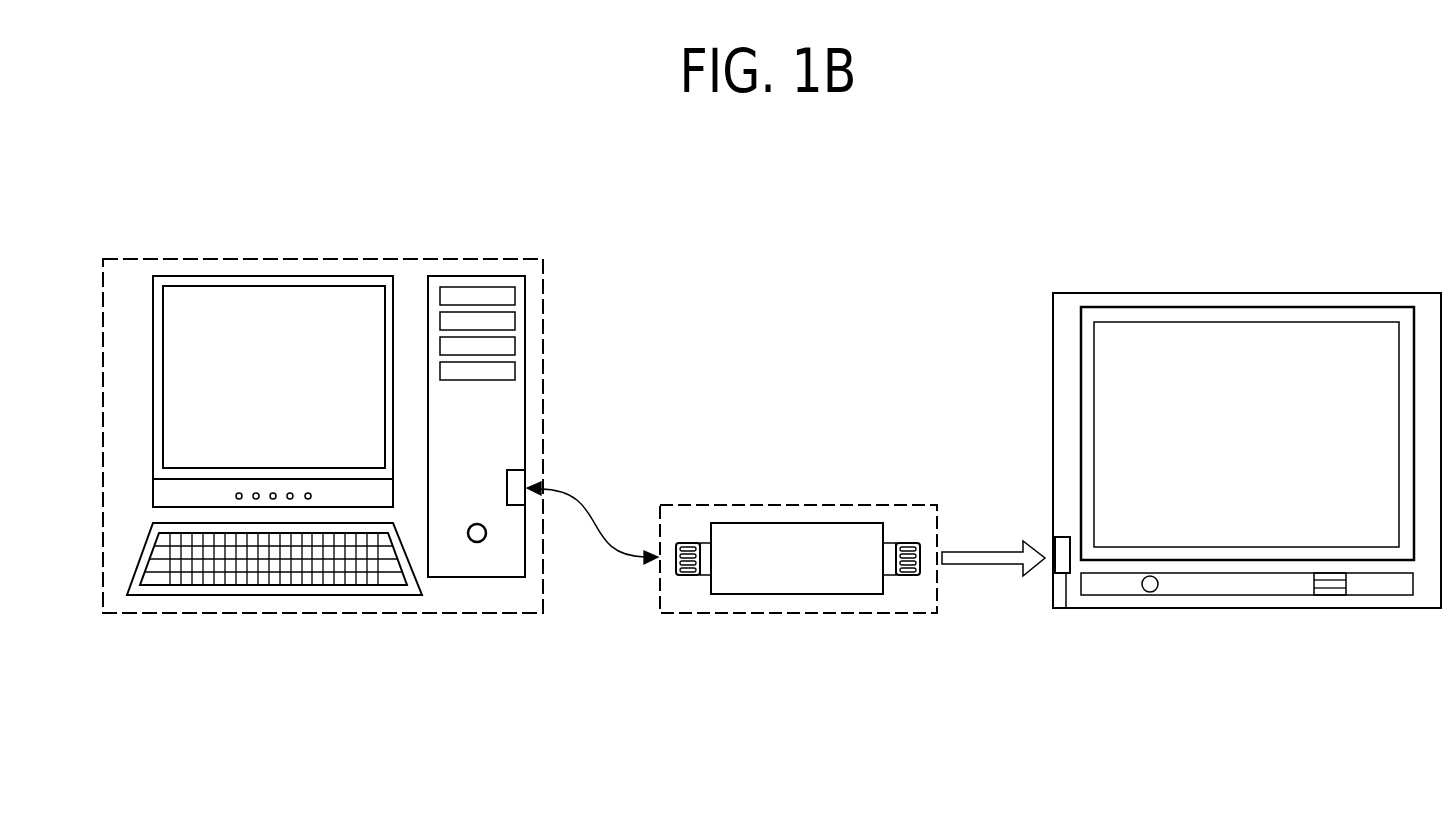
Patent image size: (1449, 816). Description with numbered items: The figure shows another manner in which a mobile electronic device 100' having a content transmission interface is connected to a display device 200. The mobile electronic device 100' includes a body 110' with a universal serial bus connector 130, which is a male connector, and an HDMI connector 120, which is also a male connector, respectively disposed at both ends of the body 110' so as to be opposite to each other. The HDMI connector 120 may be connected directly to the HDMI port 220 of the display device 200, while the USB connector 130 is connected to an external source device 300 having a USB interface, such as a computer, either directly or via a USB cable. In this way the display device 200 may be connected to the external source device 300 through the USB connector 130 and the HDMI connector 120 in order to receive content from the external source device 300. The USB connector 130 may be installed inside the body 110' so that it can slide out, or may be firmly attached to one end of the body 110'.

The external source device 300 is at (317, 259).
The display device 200 is at (1246, 293).
The HDMI port 220 is at (1062, 592).
The mobile electronic device 100' is at (798, 523).
The body 110' is at (797, 514).
The HDMI connector 120 is at (900, 543).
The USB connector 130 is at (693, 543).